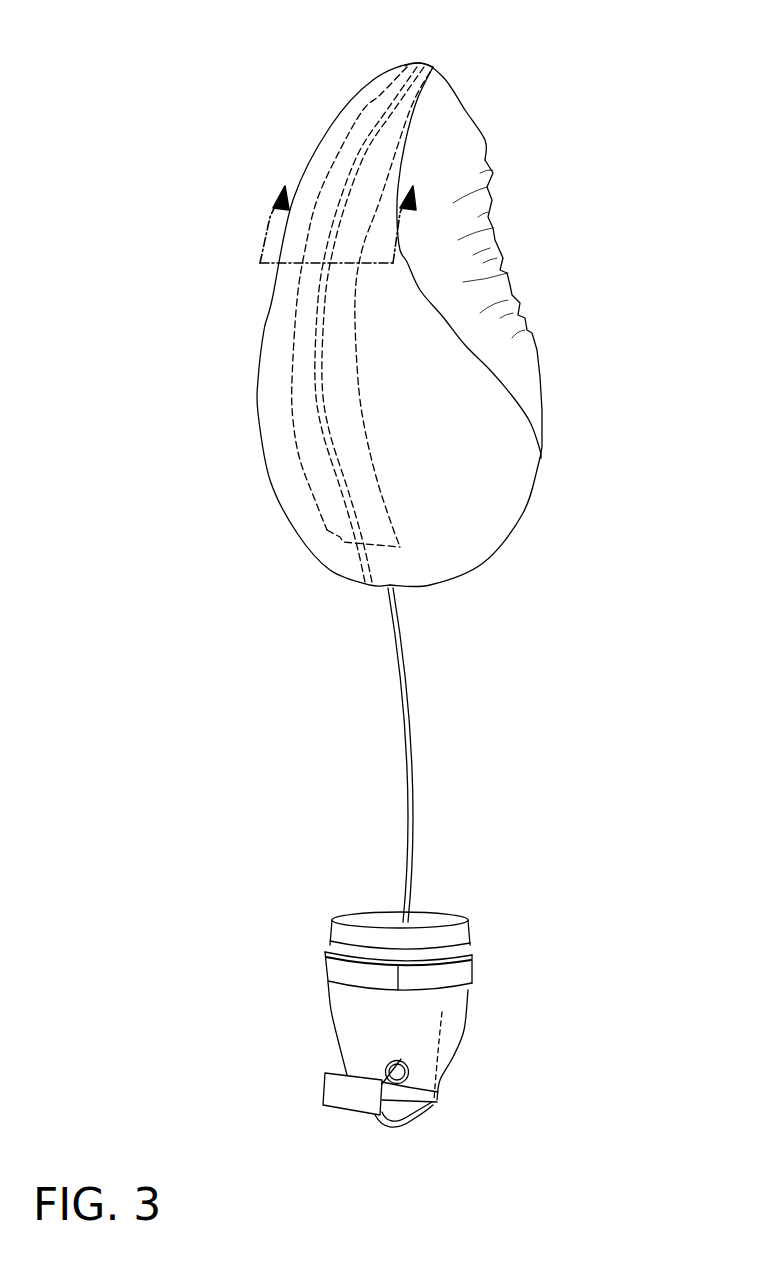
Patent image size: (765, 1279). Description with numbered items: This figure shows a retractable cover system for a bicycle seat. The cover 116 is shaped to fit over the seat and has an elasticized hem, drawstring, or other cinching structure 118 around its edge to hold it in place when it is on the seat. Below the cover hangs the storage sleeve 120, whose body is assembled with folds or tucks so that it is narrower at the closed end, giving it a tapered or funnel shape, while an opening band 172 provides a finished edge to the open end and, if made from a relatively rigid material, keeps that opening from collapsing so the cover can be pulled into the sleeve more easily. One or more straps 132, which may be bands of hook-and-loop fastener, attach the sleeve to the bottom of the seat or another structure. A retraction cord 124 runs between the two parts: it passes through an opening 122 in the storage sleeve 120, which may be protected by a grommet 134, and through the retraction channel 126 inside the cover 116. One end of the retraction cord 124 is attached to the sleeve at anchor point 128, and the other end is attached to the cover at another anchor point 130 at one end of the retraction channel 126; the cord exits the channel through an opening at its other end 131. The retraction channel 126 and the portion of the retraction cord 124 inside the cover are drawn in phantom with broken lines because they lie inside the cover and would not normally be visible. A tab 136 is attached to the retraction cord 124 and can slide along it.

The cover 116 is at (321, 113).
The cinching structure 118 is at (500, 260).
The storage sleeve 120 is at (287, 992).
The opening 122 is at (410, 1082).
The retraction cord 124 is at (320, 420).
The retraction channel 126 is at (313, 477).
The anchor point 128 is at (440, 1106).
The anchor point 130 is at (415, 63).
The other end of the retraction channel 131 is at (340, 537).
The strap 132 is at (452, 978).
The grommet 134 is at (410, 1063).
The tab 136 is at (322, 1100).
The opening band 172 is at (460, 933).